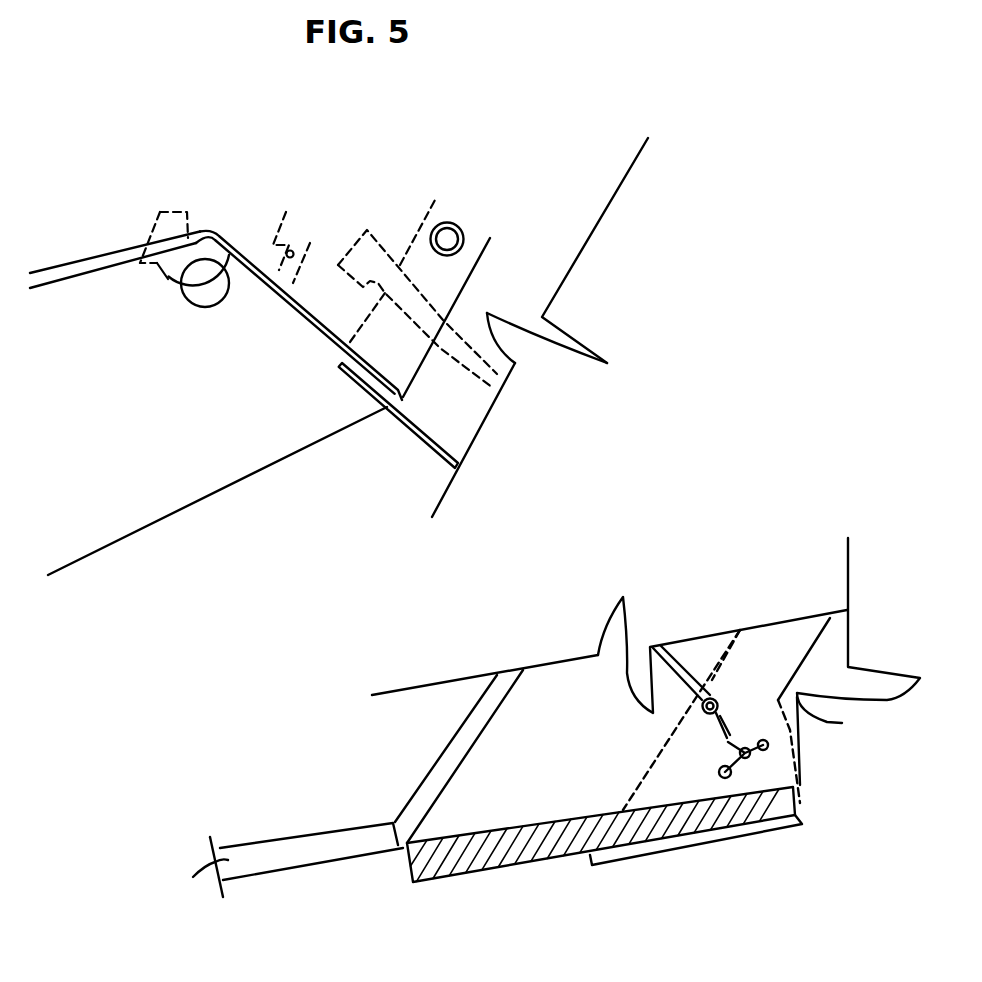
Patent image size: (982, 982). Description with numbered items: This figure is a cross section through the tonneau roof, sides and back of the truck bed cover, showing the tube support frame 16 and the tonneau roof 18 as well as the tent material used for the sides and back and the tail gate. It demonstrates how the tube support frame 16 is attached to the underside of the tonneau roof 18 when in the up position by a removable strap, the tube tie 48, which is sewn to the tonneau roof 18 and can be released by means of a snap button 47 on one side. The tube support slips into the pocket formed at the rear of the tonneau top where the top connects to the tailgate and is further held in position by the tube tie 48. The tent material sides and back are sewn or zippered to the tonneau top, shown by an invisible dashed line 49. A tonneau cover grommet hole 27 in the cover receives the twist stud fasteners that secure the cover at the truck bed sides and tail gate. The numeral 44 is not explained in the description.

The tonneau roof 18 is at (58, 317).
The tube tie 48 is at (167, 210).
The tube support frame 16 is at (223, 283).
The snap button 47 is at (291, 250).
The sewn or zippered connection 49 is at (348, 363).
The housing 44 is at (400, 265).
The tonneau cover grommet hole 27 is at (457, 223).